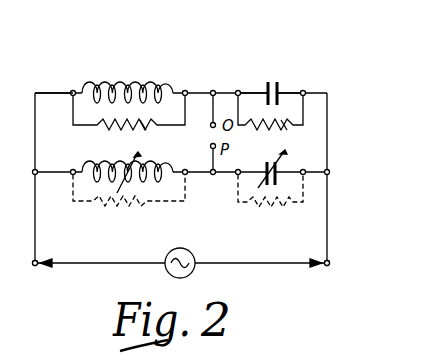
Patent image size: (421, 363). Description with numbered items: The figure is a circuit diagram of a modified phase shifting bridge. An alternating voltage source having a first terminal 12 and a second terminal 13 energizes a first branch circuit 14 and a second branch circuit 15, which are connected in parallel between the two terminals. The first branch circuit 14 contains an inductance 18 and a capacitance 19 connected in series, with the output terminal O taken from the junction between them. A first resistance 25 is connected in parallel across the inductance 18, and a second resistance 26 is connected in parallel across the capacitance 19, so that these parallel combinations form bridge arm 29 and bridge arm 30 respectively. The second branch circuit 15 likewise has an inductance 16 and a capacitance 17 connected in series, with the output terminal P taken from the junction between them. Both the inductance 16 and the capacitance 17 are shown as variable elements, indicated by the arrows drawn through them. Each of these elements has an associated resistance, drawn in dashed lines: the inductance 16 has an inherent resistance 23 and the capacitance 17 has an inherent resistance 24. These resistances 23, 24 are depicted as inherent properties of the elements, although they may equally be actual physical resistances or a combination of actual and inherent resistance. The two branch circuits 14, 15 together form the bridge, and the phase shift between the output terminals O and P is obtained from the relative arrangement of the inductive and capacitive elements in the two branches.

The first terminal 12 is at (38, 261).
The second terminal 13 is at (330, 263).
The first branch circuit 14 is at (64, 118).
The second branch circuit 15 is at (78, 162).
The inductance 16 is at (100, 168).
The capacitance 17 is at (267, 166).
The inductance 18 is at (109, 86).
The capacitance 19 is at (280, 88).
The inherent resistance 23 is at (136, 204).
The inherent resistance 24 is at (283, 204).
The first resistance 25 is at (146, 127).
The second resistance 26 is at (287, 127).
The bridge arm 29 is at (140, 117).
The bridge arm 30 is at (264, 115).